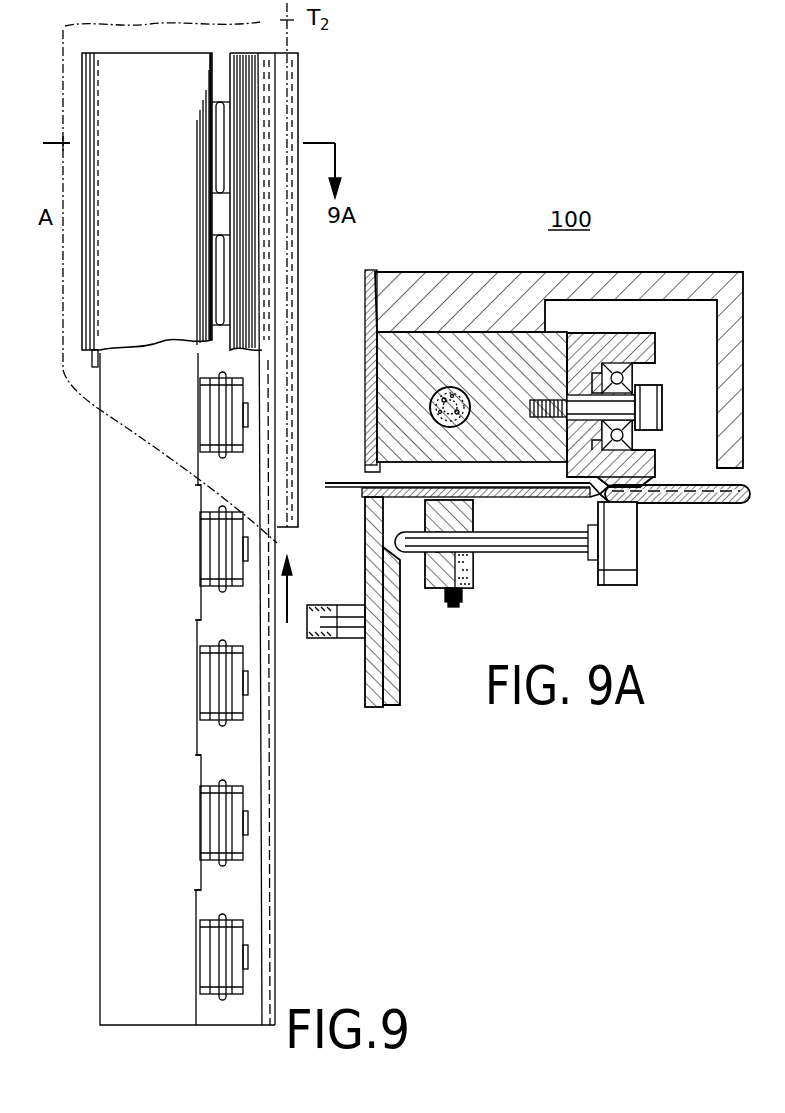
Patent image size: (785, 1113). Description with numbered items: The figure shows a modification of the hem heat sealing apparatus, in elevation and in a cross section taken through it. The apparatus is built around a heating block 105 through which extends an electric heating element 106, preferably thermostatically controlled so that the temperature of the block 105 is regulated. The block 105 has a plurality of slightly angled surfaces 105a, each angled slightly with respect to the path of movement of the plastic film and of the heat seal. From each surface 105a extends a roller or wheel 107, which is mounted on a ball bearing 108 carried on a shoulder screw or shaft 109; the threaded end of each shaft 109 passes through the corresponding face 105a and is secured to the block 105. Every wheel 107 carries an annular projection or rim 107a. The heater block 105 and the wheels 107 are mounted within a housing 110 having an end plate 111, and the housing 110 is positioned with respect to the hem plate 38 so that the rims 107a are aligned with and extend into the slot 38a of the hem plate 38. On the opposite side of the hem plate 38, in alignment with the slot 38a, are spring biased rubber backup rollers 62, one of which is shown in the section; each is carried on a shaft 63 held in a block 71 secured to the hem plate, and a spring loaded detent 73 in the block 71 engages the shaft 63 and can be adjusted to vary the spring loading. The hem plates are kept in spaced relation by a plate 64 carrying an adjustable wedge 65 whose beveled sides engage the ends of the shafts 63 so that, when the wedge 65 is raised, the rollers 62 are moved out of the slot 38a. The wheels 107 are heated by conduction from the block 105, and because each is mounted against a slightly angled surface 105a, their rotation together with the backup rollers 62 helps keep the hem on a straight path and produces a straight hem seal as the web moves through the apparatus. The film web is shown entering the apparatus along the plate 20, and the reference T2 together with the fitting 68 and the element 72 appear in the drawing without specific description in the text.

In FIG. 9A, the belt support plate 20 is at (357, 488).
In FIG. 9, the hem plate 38 is at (288, 75).
In FIG. 9A, the hem plate 38 is at (664, 505).
In FIG. 9, the slot 38a is at (230, 85).
In FIG. 9A, the slot 38a is at (634, 505).
In FIG. 9A, the rubber backup roller 62 is at (612, 580).
In FIG. 9A, the shaft 63 is at (538, 546).
In FIG. 9A, the plate 64 is at (370, 672).
In FIG. 9A, the adjustable wedge 65 is at (402, 630).
In FIG. 9A, the fitting 68 is at (352, 640).
In FIG. 9A, the block 71 is at (425, 513).
In FIG. 9A, the pin 72 is at (446, 540).
In FIG. 9A, the spring loaded detent 73 is at (464, 592).
In FIG. 9, the heating block 105 is at (117, 668).
In FIG. 9A, the heating block 105 is at (497, 357).
In FIG. 9, the angled surface 105a is at (198, 355).
In FIG. 9A, the electric heating element 106 is at (432, 412).
In FIG. 9, the roller or wheel 107 is at (212, 438).
In FIG. 9A, the roller or wheel 107 is at (650, 352).
In FIG. 9, the annular projection or rim 107a is at (215, 406).
In FIG. 9A, the annular projection or rim 107a is at (626, 332).
In FIG. 9A, the ball bearing 108 is at (633, 372).
In FIG. 9A, the shoulder screw or shaft 109 is at (662, 411).
In FIG. 9, the housing 110 is at (266, 658).
In FIG. 9A, the housing 110 is at (653, 292).
In FIG. 9A, the end plate 111 is at (365, 383).
In FIG. 9A, the tape T2 is at (694, 505).